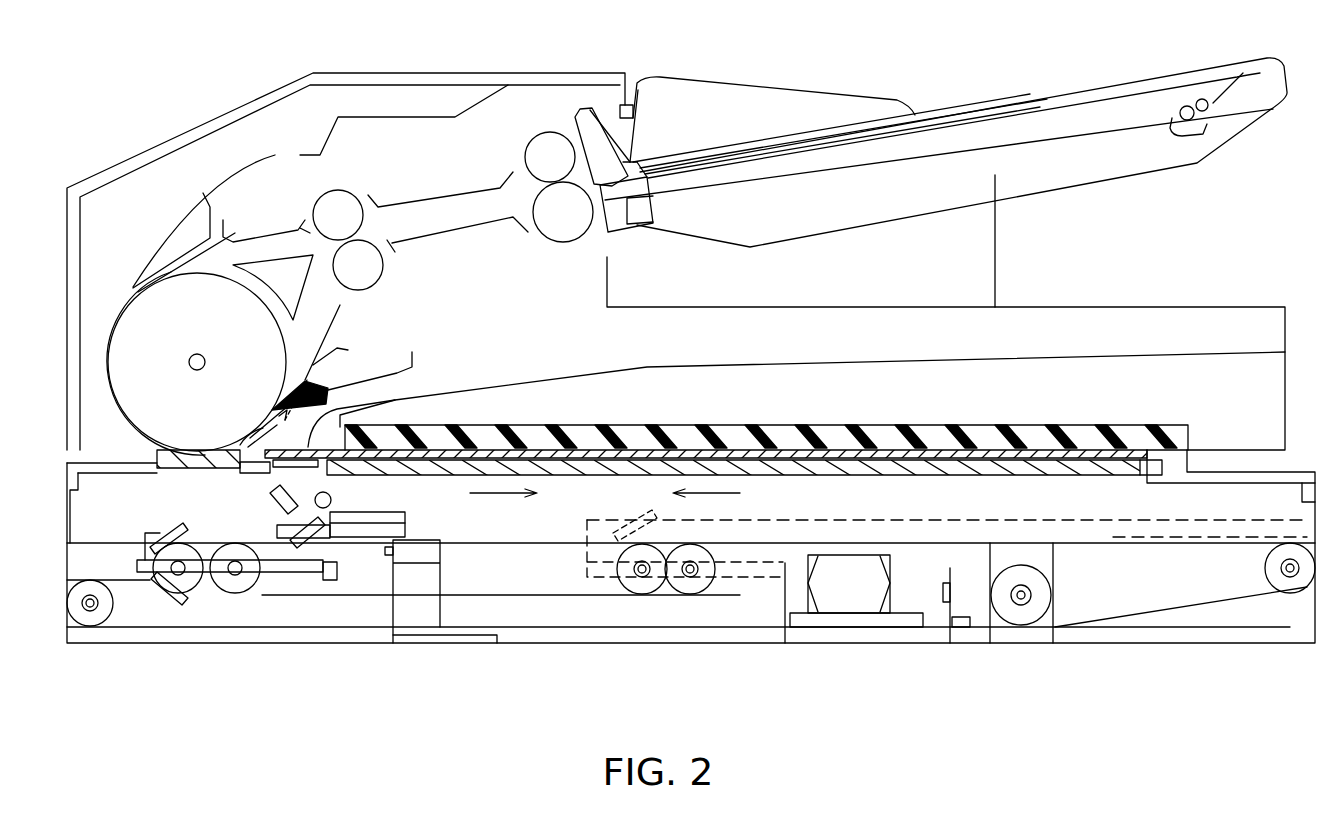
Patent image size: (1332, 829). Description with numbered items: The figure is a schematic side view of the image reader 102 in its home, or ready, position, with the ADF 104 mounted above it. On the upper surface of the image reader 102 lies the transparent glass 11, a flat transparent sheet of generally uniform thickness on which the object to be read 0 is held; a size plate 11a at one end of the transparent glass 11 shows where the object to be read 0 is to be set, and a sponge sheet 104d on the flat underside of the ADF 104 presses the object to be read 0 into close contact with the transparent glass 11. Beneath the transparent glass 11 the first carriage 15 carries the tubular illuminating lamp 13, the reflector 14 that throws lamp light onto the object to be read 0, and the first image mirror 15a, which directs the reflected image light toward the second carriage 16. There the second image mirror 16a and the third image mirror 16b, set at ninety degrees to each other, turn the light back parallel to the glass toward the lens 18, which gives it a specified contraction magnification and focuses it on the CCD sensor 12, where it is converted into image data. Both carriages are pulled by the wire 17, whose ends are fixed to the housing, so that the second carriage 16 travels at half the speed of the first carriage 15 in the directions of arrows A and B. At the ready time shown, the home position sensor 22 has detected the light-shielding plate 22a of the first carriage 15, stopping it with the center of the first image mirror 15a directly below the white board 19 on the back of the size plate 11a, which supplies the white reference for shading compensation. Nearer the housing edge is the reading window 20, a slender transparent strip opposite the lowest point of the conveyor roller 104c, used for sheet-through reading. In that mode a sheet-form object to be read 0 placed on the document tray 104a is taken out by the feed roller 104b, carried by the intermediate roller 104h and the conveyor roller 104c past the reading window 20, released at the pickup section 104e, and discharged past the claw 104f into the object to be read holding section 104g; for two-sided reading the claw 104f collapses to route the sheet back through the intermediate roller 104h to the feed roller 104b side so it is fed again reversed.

The ADF 104 is at (290, 183).
The document tray 104a is at (985, 100).
The feed roller 104b is at (527, 158).
The conveyor roller 104c is at (135, 287).
The sponge sheet 104d is at (755, 430).
The pickup section 104e is at (252, 430).
The claw 104f is at (312, 385).
The object to be read holding section 104g is at (575, 378).
The intermediate roller 104h is at (352, 194).
The object to be read 0 is at (925, 110).
The transparent glass 11 is at (782, 468).
The size plate 11a is at (350, 408).
The CCD sensor 12 is at (945, 588).
The illuminating lamp 13 is at (333, 500).
The reflector 14 is at (270, 505).
The first carriage 15 is at (405, 527).
The first image mirror 15a is at (320, 545).
The second carriage 16 is at (290, 575).
The second image mirror 16a is at (160, 533).
The third image mirror 16b is at (180, 595).
The wire 17 is at (540, 596).
The lens 18 is at (865, 555).
The white board 19 is at (278, 470).
The reading window 20 is at (175, 470).
The home position sensor 22 is at (437, 555).
The light-shielding plate 22a is at (387, 560).
The image reader 102 is at (1137, 592).